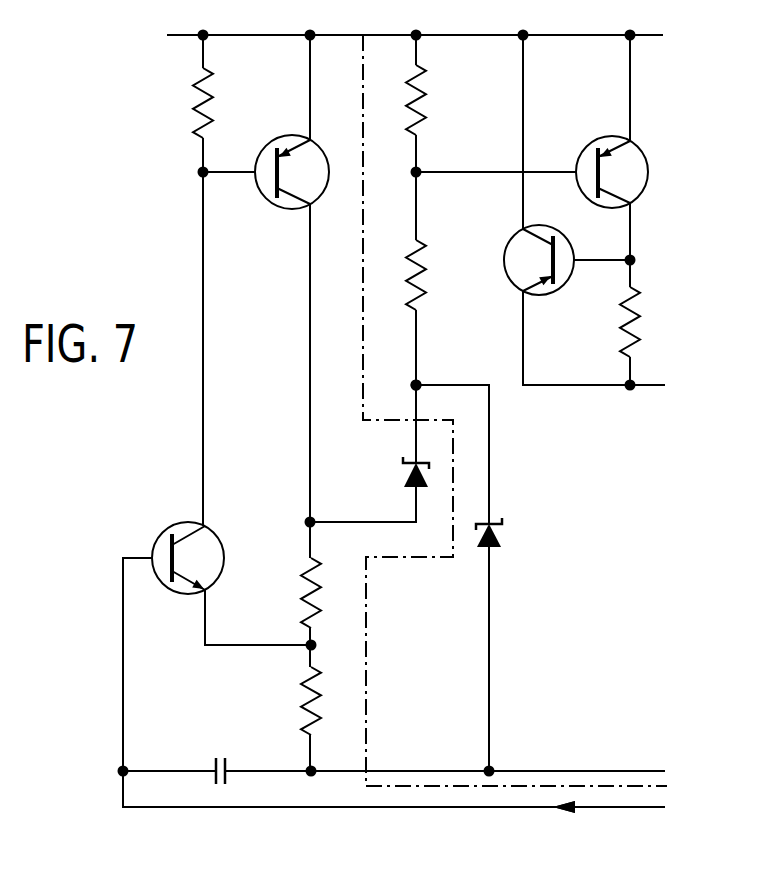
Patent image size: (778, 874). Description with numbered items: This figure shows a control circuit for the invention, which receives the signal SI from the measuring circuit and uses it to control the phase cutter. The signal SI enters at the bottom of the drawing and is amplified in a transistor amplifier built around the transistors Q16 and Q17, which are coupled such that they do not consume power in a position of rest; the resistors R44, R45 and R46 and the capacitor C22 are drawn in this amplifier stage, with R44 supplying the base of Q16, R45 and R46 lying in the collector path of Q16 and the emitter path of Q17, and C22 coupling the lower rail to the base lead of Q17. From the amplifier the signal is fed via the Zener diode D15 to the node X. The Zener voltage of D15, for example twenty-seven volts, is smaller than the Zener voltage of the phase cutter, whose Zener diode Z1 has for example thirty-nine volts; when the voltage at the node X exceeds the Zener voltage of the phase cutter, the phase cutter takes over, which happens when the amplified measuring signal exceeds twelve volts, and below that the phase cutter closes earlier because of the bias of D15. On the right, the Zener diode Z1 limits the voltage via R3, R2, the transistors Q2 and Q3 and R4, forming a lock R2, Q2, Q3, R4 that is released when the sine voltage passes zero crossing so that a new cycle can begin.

The resistor R44 is at (181, 103).
The resistor R2 is at (428, 100).
The resistor R3 is at (430, 275).
The resistor R4 is at (642, 322).
The resistor R45 is at (289, 593).
The resistor R46 is at (289, 701).
The capacitor C22 is at (216, 760).
The transistor Q16 is at (278, 174).
The transistor Q2 is at (601, 171).
The transistor Q3 is at (547, 267).
The transistor Q17 is at (178, 565).
The Zener diode D15 is at (395, 477).
The Zener diode Z1 is at (503, 539).
The node X is at (408, 385).
The signal SI is at (622, 809).